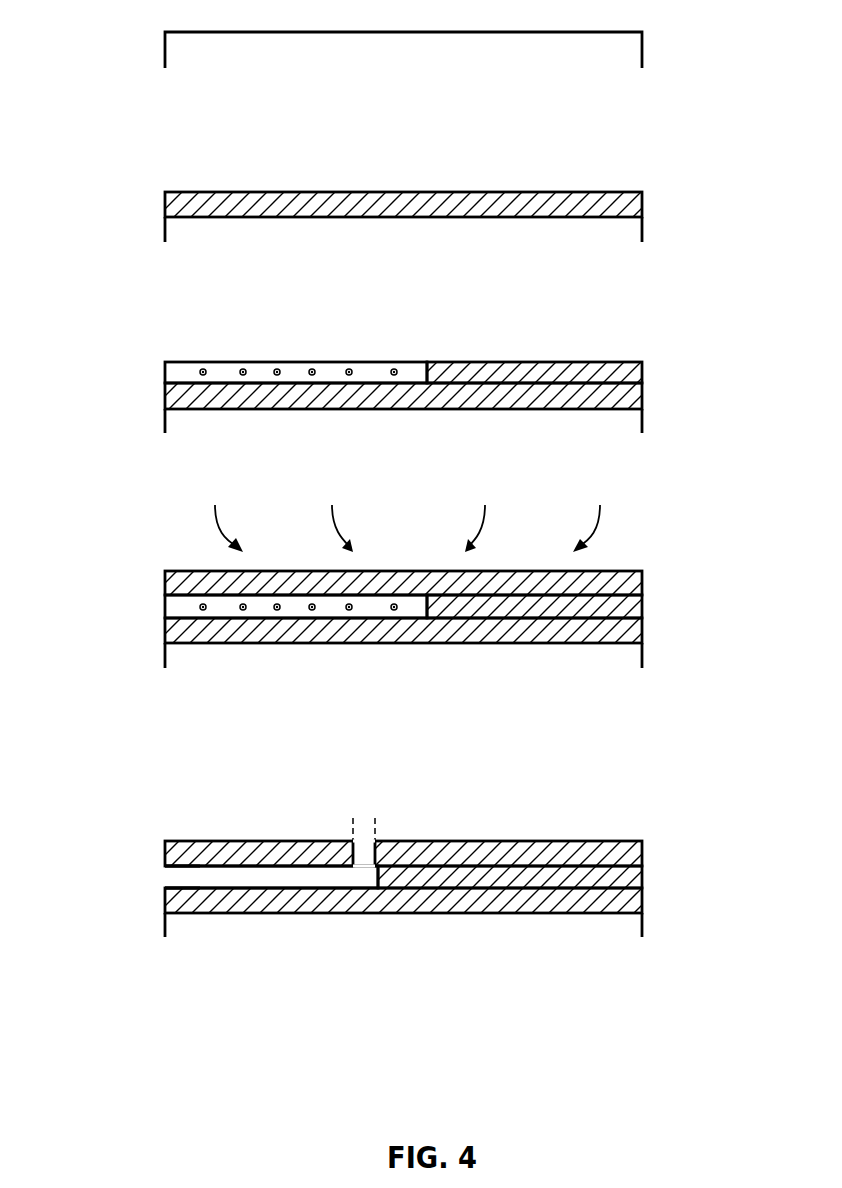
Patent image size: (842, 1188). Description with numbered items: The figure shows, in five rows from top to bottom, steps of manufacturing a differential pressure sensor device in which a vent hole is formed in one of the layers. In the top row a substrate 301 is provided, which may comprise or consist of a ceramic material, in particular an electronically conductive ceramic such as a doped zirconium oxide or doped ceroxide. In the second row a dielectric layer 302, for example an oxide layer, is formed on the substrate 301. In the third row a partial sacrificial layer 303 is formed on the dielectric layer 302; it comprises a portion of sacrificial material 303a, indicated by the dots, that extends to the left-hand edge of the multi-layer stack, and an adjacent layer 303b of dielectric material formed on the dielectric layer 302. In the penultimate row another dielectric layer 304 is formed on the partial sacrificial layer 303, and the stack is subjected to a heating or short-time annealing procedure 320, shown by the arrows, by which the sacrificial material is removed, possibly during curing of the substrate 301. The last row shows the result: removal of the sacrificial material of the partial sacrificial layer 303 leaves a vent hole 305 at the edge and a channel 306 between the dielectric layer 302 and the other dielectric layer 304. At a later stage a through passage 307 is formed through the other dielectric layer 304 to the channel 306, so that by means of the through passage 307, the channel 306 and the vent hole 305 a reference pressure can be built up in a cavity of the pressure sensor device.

The substrate 301 is at (642, 48).
The dielectric layer 302 is at (642, 203).
The partial sacrificial layer 303 is at (449, 607).
The sacrificial material 303a is at (327, 362).
The layer of dielectric material 303b is at (510, 362).
The other dielectric layer 304 is at (642, 575).
The vent hole 305 is at (153, 880).
The channel 306 is at (188, 880).
The through passage 307 is at (375, 818).
The heating/annealing procedure 320 is at (407, 514).